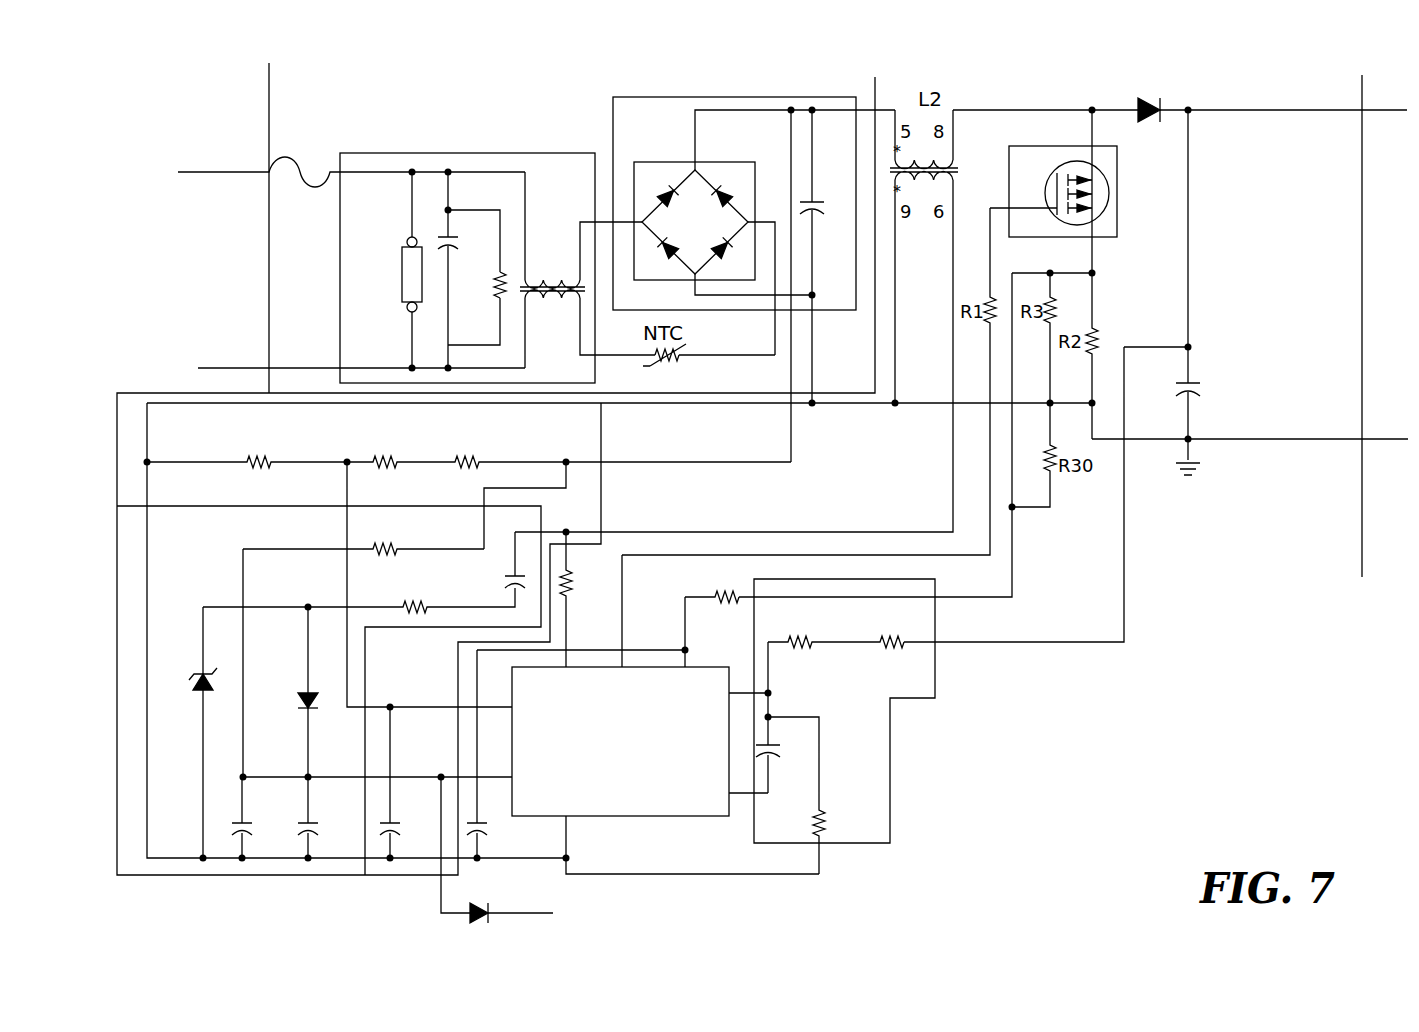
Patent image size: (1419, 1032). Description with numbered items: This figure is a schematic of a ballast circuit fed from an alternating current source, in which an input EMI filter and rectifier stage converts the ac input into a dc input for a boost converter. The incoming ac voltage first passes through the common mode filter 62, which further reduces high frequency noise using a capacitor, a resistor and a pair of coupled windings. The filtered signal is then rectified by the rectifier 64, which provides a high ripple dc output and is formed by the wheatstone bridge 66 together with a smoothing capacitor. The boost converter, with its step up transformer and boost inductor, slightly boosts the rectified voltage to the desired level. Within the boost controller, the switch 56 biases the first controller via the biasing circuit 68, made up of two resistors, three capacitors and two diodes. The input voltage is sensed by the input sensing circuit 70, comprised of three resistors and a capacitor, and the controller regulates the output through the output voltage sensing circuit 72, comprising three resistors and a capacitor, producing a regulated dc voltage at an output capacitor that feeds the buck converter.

The common mode filter 62 is at (528, 153).
The rectifier 64 is at (668, 97).
The wheatstone bridge 66 is at (697, 162).
The switch 56 is at (1037, 146).
The biasing circuit 68 is at (200, 566).
The input sensing circuit 70 is at (603, 490).
The output voltage sensing circuit 72 is at (937, 674).